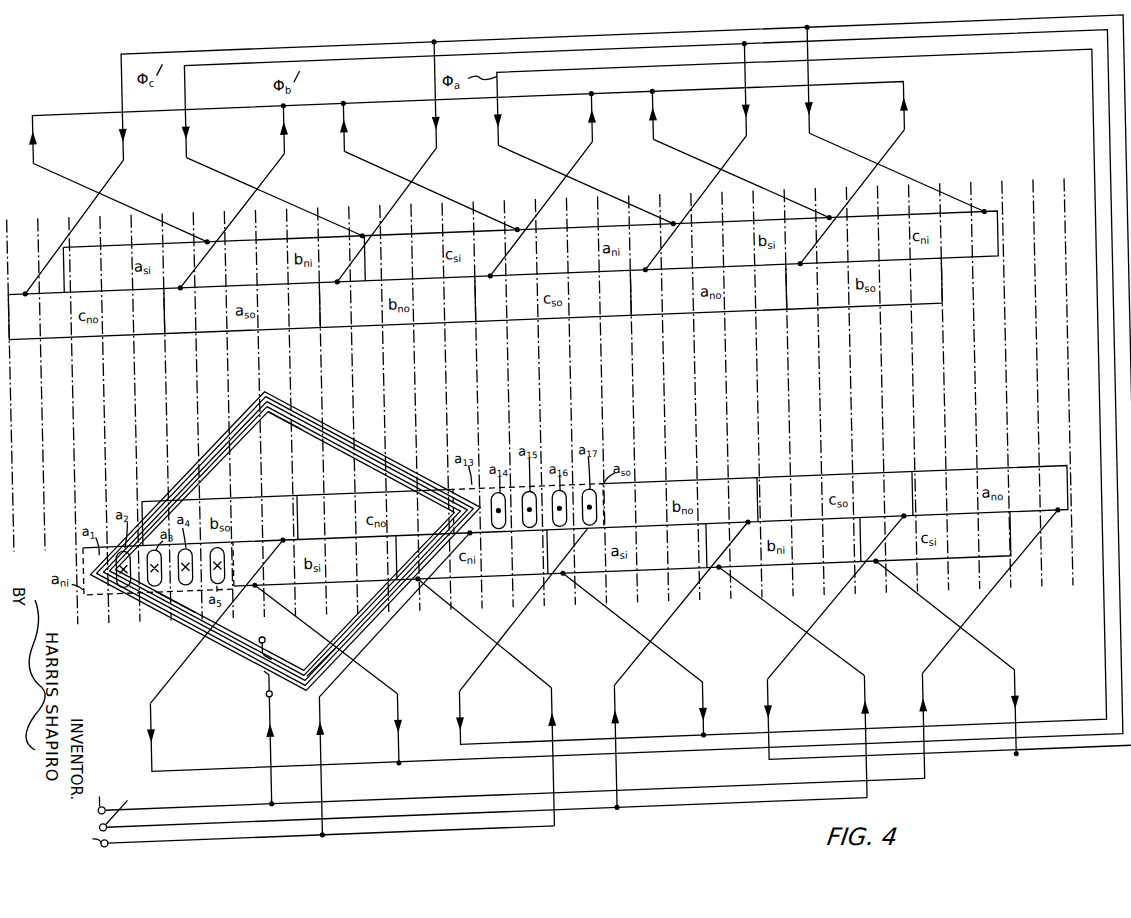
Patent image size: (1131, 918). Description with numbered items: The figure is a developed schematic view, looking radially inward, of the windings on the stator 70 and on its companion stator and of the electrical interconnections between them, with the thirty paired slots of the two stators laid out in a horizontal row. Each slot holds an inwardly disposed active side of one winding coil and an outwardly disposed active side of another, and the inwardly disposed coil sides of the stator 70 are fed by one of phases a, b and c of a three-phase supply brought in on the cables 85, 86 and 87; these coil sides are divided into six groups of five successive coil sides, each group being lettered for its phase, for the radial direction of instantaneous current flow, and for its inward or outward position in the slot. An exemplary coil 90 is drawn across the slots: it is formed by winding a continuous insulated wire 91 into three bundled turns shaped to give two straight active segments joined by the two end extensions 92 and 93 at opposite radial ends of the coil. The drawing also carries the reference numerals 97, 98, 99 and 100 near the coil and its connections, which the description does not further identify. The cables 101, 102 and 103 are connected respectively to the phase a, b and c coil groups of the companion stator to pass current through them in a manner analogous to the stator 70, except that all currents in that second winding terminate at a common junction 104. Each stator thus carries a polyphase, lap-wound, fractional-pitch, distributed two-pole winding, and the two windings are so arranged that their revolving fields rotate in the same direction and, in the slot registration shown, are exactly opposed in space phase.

The stator 70 is at (102, 536).
The cable 85 is at (200, 810).
The cable 86 is at (190, 833).
The cable 87 is at (180, 850).
The coil 90 is at (190, 463).
The continuous insulated wire 91 is at (221, 677).
The end extension 92 is at (300, 677).
The end extension 93 is at (280, 444).
The coil lead 97 is at (260, 764).
The coil lead terminal 98 is at (258, 707).
The coil lead terminal 99 is at (259, 646).
The end connection 100 is at (508, 642).
The cable 101 is at (942, 97).
The cable 102 is at (992, 76).
The cable 103 is at (1036, 62).
The common junction 104 is at (388, 116).